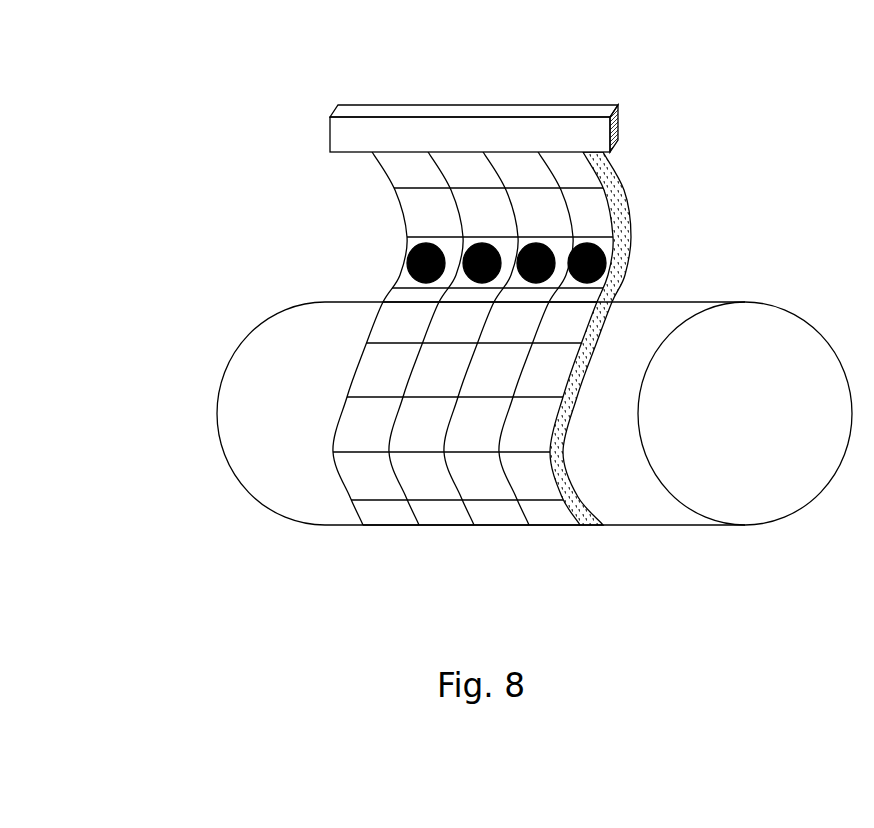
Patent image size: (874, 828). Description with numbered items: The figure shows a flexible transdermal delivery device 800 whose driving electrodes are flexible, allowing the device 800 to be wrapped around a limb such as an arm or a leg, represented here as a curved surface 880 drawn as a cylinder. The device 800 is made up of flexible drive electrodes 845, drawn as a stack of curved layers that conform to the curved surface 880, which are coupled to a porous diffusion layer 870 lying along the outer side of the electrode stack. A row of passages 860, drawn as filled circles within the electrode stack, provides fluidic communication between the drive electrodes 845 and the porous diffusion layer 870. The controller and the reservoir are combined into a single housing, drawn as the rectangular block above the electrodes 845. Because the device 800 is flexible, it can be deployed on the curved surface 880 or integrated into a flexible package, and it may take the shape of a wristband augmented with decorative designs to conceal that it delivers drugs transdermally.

The device 800 is at (284, 105).
The flexible drive electrodes 845 is at (407, 175).
The passages 860 is at (400, 265).
The porous diffusion layer 870 is at (620, 203).
The curved surface 880 is at (775, 439).